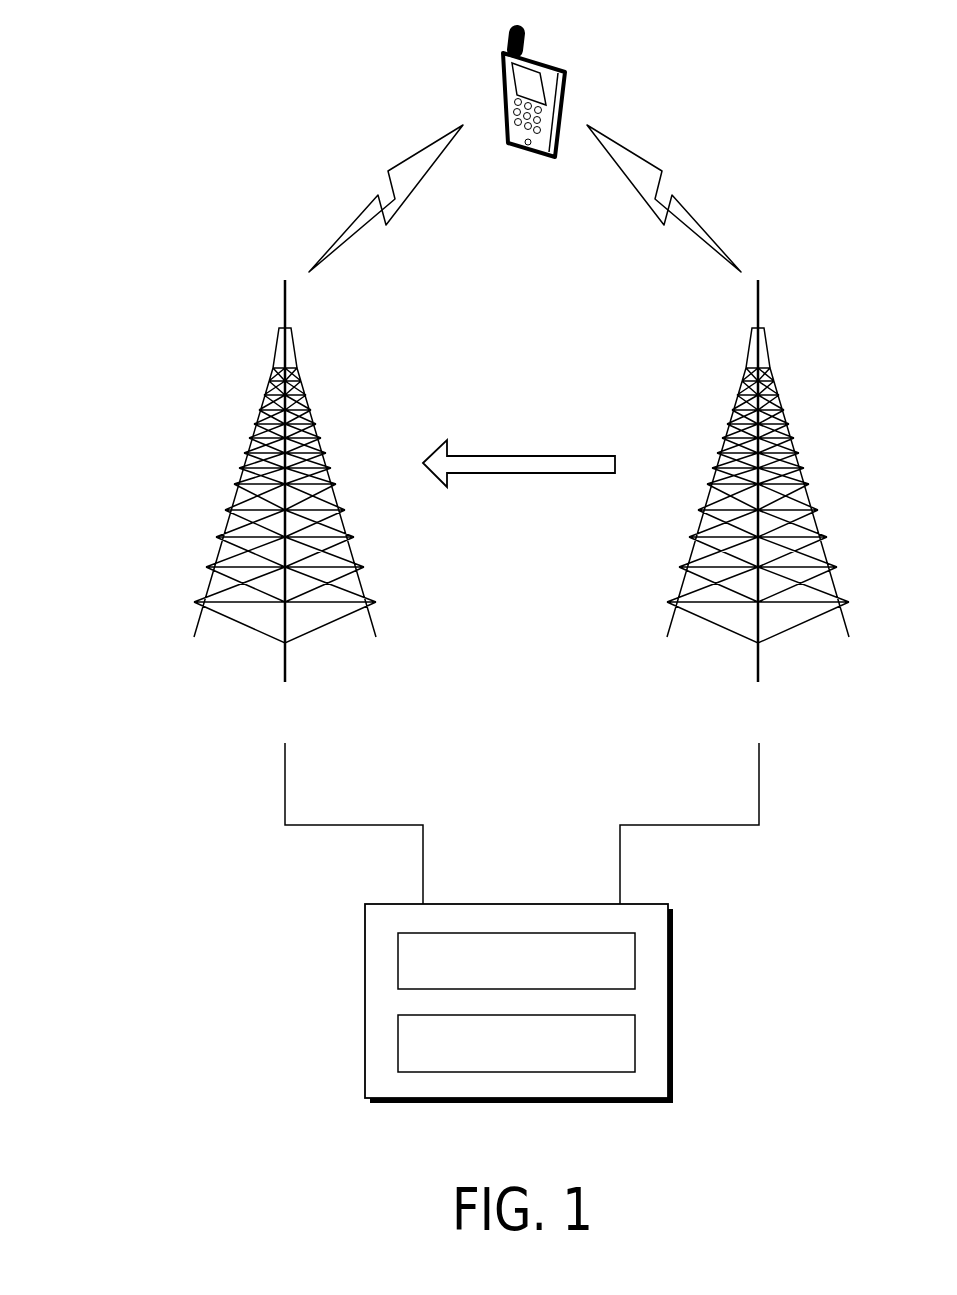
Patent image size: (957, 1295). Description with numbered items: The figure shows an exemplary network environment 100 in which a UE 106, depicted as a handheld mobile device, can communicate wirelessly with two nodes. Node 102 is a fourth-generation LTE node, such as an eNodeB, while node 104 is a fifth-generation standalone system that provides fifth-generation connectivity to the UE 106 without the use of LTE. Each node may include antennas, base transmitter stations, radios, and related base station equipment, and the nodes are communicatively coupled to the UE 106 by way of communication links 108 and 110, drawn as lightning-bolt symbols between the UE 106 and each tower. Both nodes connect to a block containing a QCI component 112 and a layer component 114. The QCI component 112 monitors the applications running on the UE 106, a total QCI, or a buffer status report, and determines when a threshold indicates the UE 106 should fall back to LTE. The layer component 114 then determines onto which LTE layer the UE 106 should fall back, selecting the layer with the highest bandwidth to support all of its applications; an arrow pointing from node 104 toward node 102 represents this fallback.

The network environment 100 is at (114, 89).
The node 102 is at (249, 443).
The node 104 is at (796, 443).
The UE 106 is at (567, 77).
The communication link 108 is at (369, 190).
The communication link 110 is at (681, 192).
The QCI component 112 is at (635, 960).
The layer component 114 is at (635, 1041).